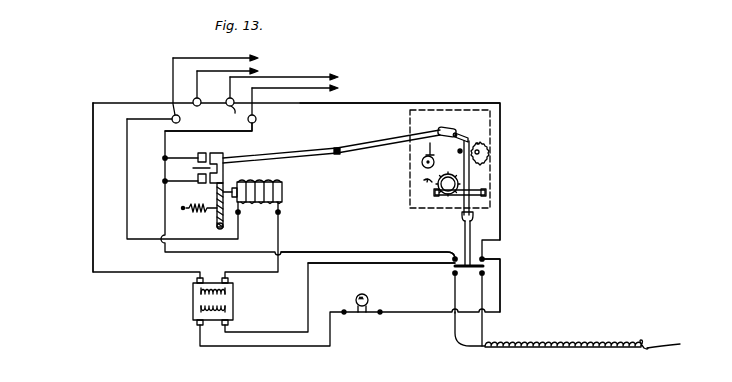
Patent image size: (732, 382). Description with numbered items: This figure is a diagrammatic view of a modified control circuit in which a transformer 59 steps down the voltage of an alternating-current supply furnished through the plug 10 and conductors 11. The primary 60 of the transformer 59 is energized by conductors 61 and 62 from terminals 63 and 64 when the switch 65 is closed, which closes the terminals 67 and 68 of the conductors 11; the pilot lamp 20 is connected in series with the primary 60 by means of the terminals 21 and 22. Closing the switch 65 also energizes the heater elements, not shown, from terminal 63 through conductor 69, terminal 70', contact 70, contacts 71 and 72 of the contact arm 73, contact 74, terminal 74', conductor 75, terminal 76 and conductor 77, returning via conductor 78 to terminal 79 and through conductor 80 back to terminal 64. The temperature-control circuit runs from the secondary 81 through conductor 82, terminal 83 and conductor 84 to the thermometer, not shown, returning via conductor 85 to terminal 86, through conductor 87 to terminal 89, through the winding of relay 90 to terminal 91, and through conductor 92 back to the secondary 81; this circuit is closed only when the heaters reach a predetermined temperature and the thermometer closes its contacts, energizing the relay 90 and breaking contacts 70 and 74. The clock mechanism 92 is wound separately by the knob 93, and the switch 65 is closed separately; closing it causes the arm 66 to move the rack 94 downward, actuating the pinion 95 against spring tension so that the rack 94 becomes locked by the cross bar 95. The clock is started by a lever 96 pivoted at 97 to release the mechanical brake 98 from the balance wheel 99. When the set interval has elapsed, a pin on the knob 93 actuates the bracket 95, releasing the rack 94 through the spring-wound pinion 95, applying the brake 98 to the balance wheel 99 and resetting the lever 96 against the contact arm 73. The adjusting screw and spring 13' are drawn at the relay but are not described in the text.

The plug 10 is at (673, 341).
The conductors 11 is at (560, 344).
The adjusting screw and spring 13' is at (202, 206).
The pilot lamp 20 is at (368, 297).
The terminal 21 is at (344, 315).
The terminal 22 is at (382, 315).
The transformer 59 is at (235, 296).
The primary 60 is at (200, 306).
The conductor 61 is at (503, 292).
The conductor 62 is at (348, 262).
The terminal 63 is at (452, 260).
The terminal 64 is at (485, 257).
The switch 65 is at (487, 267).
The arm 66 is at (463, 238).
The terminal 67 is at (453, 276).
The terminal 68 is at (472, 287).
The conductor 69 is at (355, 252).
The contact 70 is at (190, 185).
The terminal 70' is at (150, 179).
The contact 71 is at (194, 167).
The contact 72 is at (216, 154).
The contact arm 73 is at (224, 166).
The contact 74 is at (195, 149).
The terminal 74' is at (149, 152).
The conductor 75 is at (268, 131).
The terminal 76 is at (257, 119).
The conductor 77 is at (255, 90).
The conductor 78 is at (232, 80).
The terminal 79 is at (238, 112).
The conductor 80 is at (326, 103).
The secondary 81 is at (200, 292).
The conductor 82 is at (93, 263).
The terminal 83 is at (208, 102).
The conductor 84 is at (197, 83).
The conductor 85 is at (183, 70).
The terminal 86 is at (172, 116).
The conductor 87 is at (127, 195).
The terminal 89 is at (240, 214).
The relay 90 is at (283, 191).
The terminal 91 is at (283, 212).
The conductor 92 is at (452, 112).
The knob 93 is at (446, 191).
The rack 94 is at (470, 175).
The pinion 95 is at (487, 160).
The lever 96 is at (303, 158).
The pivot 97 is at (340, 156).
The mechanical brake 98 is at (424, 146).
The balance wheel 99 is at (421, 164).